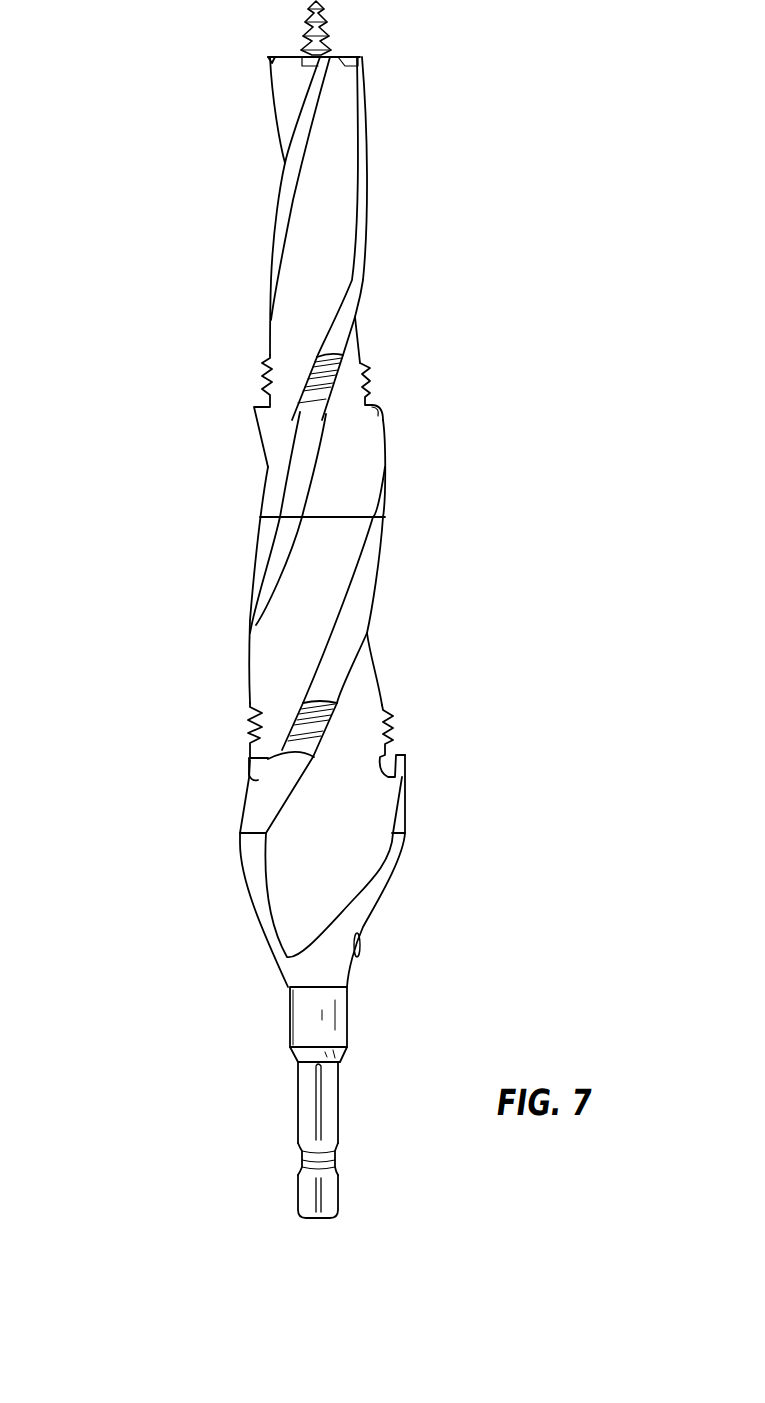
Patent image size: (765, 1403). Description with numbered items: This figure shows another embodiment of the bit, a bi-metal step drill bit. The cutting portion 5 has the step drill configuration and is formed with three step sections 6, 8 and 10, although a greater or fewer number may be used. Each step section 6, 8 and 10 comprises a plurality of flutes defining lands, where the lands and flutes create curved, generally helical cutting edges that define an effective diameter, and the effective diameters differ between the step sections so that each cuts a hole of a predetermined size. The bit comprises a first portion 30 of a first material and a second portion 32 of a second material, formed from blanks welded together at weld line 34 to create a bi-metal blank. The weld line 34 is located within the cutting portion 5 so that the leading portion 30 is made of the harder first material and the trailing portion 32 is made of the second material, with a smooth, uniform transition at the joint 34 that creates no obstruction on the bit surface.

The cutting portion 5 is at (150, 35).
The step section 6 is at (409, 212).
The step section 8 is at (406, 544).
The step section 10 is at (429, 759).
The first portion 30 is at (373, 129).
The second portion 32 is at (382, 673).
The weld line 34 is at (322, 518).